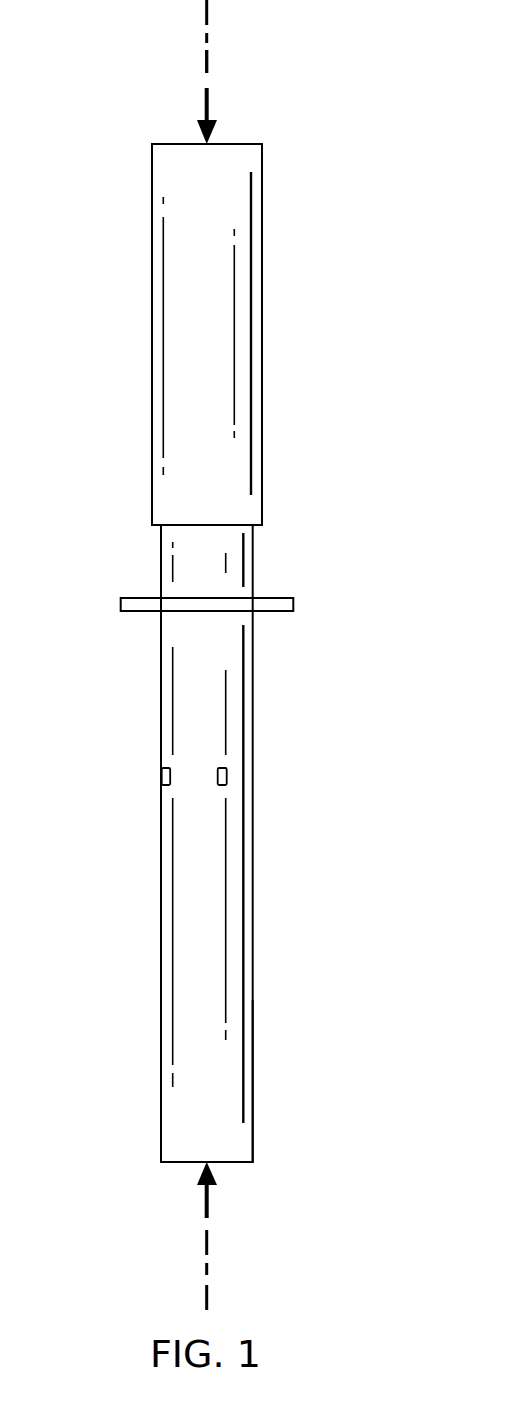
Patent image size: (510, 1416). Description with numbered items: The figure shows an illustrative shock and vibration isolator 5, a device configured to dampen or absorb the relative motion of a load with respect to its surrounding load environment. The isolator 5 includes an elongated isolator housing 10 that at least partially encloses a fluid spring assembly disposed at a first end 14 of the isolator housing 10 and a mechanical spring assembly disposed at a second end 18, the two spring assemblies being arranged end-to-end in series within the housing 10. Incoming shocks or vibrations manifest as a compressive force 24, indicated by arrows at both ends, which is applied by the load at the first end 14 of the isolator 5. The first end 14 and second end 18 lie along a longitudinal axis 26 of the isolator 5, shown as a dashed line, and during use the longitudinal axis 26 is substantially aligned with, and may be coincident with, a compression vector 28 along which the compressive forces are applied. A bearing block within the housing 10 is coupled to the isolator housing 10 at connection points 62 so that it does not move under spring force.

The shock and vibration isolator 5 is at (296, 98).
The isolator housing 10 is at (161, 648).
The first end 14 is at (118, 168).
The second end 18 is at (118, 1119).
The compressive force 24 is at (205, 100).
The longitudinal axis 26 is at (205, 10).
The compression vector 28 is at (210, 60).
The connection points 62 is at (160, 775).